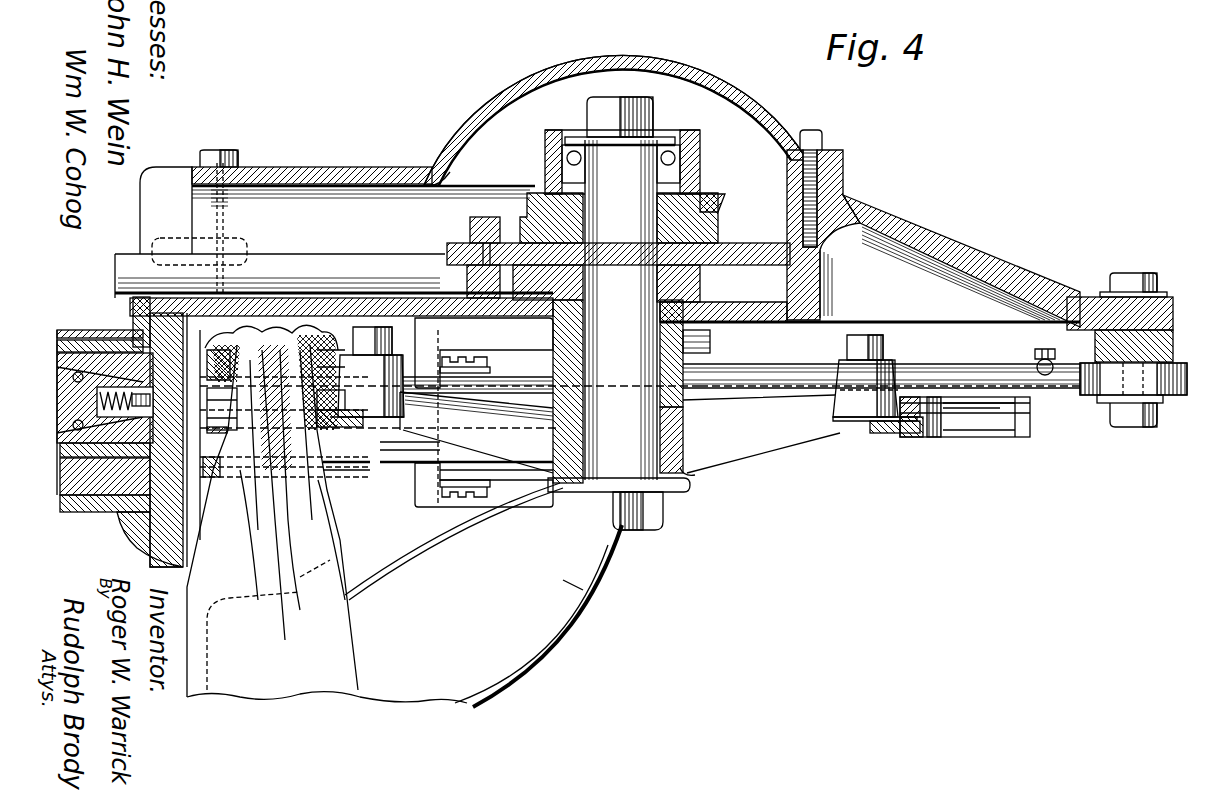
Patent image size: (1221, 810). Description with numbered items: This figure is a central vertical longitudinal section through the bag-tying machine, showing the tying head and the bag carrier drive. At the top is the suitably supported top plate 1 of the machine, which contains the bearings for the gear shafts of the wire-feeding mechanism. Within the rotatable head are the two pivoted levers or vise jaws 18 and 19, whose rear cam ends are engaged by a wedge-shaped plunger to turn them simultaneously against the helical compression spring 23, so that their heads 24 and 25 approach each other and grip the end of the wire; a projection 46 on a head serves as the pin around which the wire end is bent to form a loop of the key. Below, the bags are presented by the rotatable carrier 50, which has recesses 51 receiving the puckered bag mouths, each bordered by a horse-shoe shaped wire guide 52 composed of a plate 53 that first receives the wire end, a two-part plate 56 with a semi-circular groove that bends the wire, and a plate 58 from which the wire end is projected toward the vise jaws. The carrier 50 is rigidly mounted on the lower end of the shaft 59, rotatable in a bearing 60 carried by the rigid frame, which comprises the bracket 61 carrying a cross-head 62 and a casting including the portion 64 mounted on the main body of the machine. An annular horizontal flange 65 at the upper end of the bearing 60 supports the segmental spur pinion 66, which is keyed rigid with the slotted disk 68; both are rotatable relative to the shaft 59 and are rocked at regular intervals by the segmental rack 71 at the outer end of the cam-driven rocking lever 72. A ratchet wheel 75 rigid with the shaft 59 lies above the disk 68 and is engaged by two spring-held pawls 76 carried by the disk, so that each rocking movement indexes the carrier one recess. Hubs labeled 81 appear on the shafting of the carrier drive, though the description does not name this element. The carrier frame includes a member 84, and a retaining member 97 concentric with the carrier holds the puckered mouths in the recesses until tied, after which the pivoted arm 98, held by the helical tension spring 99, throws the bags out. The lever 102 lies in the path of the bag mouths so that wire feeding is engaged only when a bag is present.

The top plate 1 is at (183, 553).
The vise-jaw lever 18 is at (135, 340).
The vise-jaw lever 19 is at (213, 477).
The helical compression spring 23 is at (140, 332).
The head of lever 24 is at (210, 350).
The head of lever 25 is at (57, 335).
The projection 46 is at (83, 512).
The rotatable carrier 50 is at (893, 435).
The recess 51 is at (982, 410).
The wire guide 52 is at (950, 404).
The plate 53 is at (962, 415).
The plate 56 is at (905, 430).
The plate 58 is at (1014, 405).
The shaft 59 is at (635, 200).
The bearing 60 is at (683, 360).
The bracket 61 is at (585, 583).
The cross-head 62 is at (456, 475).
The portion of member 64 is at (607, 66).
The annular horizontal flange 65 is at (789, 322).
The spur pinion 66 is at (813, 273).
The disk 68 is at (866, 215).
The segmental rack 71 is at (484, 353).
The rocking lever 72 is at (350, 272).
The ratchet wheel 75 is at (708, 222).
The spring-held pawl 76 is at (450, 200).
The hub 81 is at (380, 327).
The carrier frame member 84 is at (1170, 344).
The retaining member 97 is at (223, 317).
The arm 98 is at (953, 370).
The helical tension spring 99 is at (1047, 375).
The lever 102 is at (270, 495).